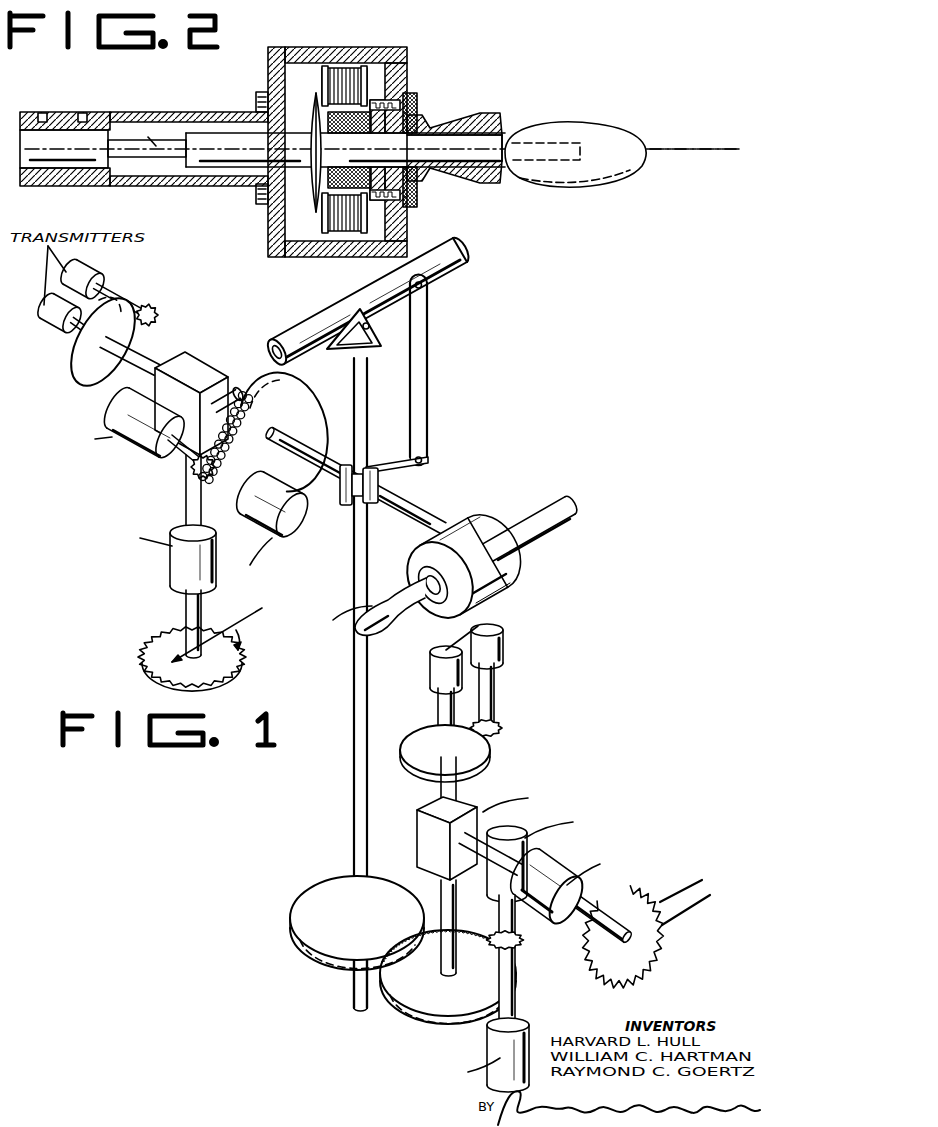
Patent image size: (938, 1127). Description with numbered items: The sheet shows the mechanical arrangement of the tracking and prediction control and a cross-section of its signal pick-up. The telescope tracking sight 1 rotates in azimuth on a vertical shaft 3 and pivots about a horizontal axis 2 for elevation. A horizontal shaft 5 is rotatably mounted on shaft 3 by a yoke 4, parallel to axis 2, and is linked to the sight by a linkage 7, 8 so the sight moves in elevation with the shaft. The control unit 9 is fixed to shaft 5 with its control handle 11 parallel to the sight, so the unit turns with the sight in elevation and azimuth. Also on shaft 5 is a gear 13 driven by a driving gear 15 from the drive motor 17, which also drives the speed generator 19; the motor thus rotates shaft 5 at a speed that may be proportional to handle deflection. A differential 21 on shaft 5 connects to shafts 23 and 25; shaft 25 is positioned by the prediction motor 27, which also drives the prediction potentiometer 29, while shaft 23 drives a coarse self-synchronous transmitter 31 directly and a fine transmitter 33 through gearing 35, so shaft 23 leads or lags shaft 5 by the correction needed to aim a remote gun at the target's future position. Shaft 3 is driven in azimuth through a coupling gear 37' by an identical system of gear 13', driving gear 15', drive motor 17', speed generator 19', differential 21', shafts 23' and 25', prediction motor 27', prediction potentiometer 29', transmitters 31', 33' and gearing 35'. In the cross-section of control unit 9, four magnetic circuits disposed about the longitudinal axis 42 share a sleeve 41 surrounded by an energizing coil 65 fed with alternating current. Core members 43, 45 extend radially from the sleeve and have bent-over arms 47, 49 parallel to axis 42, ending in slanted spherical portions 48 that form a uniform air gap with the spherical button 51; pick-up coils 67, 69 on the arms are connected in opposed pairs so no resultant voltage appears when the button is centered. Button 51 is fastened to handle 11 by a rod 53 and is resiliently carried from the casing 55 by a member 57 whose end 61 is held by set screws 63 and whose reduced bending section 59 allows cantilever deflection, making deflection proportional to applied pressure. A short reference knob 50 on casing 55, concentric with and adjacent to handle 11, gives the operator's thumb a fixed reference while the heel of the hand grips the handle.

In FIG. 1, the telescope tracking sight 1 is at (452, 272).
In FIG. 1, the horizontal axis 2 is at (374, 327).
In FIG. 1, the vertical shaft 3 is at (353, 693).
In FIG. 1, the yoke 4 is at (374, 469).
In FIG. 1, the horizontal shaft 5 is at (408, 512).
In FIG. 1, the linkage 7 is at (430, 380).
In FIG. 1, the linkage 8 is at (432, 464).
In FIG. 2, the control unit 9 is at (462, 80).
In FIG. 1, the control unit 9 is at (490, 518).
In FIG. 2, the control handle 11 is at (581, 125).
In FIG. 1, the control handle 11 is at (380, 632).
In FIG. 1, the gear 13 is at (291, 432).
In FIG. 1, the gear 13' is at (448, 987).
In FIG. 1, the driving gear 15 is at (211, 491).
In FIG. 1, the driving gear 15' is at (526, 957).
In FIG. 1, the drive motor 17 is at (117, 434).
In FIG. 1, the drive motor 17' is at (591, 855).
In FIG. 1, the speed generator 19 is at (274, 533).
In FIG. 1, the speed generator 19' is at (457, 1055).
In FIG. 1, the differential 21 is at (221, 384).
In FIG. 1, the differential 21' is at (532, 832).
In FIG. 1, the shaft 23 is at (120, 342).
In FIG. 1, the shaft 23' is at (460, 767).
In FIG. 1, the shaft 25 is at (197, 525).
In FIG. 1, the shaft 25' is at (537, 904).
In FIG. 1, the prediction motor 27 is at (133, 555).
In FIG. 1, the prediction motor 27' is at (609, 882).
In FIG. 1, the prediction potentiometer 29 is at (180, 649).
In FIG. 1, the prediction potentiometer 29' is at (646, 934).
In FIG. 1, the coarse self-synchronous transmitter 31 is at (56, 318).
In FIG. 1, the coarse self-synchronous transmitter 31' is at (433, 698).
In FIG. 1, the fine self-synchronous transmitter 33 is at (105, 285).
In FIG. 1, the fine self-synchronous transmitter 33' is at (533, 669).
In FIG. 1, the gearing 35 is at (163, 306).
In FIG. 1, the gearing 35' is at (512, 722).
In FIG. 1, the coupling gear 37' is at (340, 942).
In FIG. 2, the sleeve 41 is at (428, 136).
In FIG. 2, the longitudinal axis 42 is at (694, 156).
In FIG. 2, the core member 43 is at (410, 95).
In FIG. 2, the core member 45 is at (402, 228).
In FIG. 2, the arm 47 is at (378, 92).
In FIG. 2, the slanted portion 48 is at (313, 102).
In FIG. 2, the arm 49 is at (312, 212).
In FIG. 2, the stabilizing or reference knob 50 is at (503, 124).
In FIG. 2, the button 51 is at (315, 95).
In FIG. 2, the rod 53 is at (472, 119).
In FIG. 2, the casing 55 is at (180, 113).
In FIG. 2, the member 57 is at (212, 167).
In FIG. 2, the reduced resilient bending section 59 is at (142, 158).
In FIG. 2, the end 61 is at (32, 160).
In FIG. 2, the set screws 63 is at (82, 113).
In FIG. 2, the energizing coil 65 is at (415, 185).
In FIG. 2, the pick-up coil 67 is at (346, 70).
In FIG. 2, the pick-up coil 69 is at (345, 233).